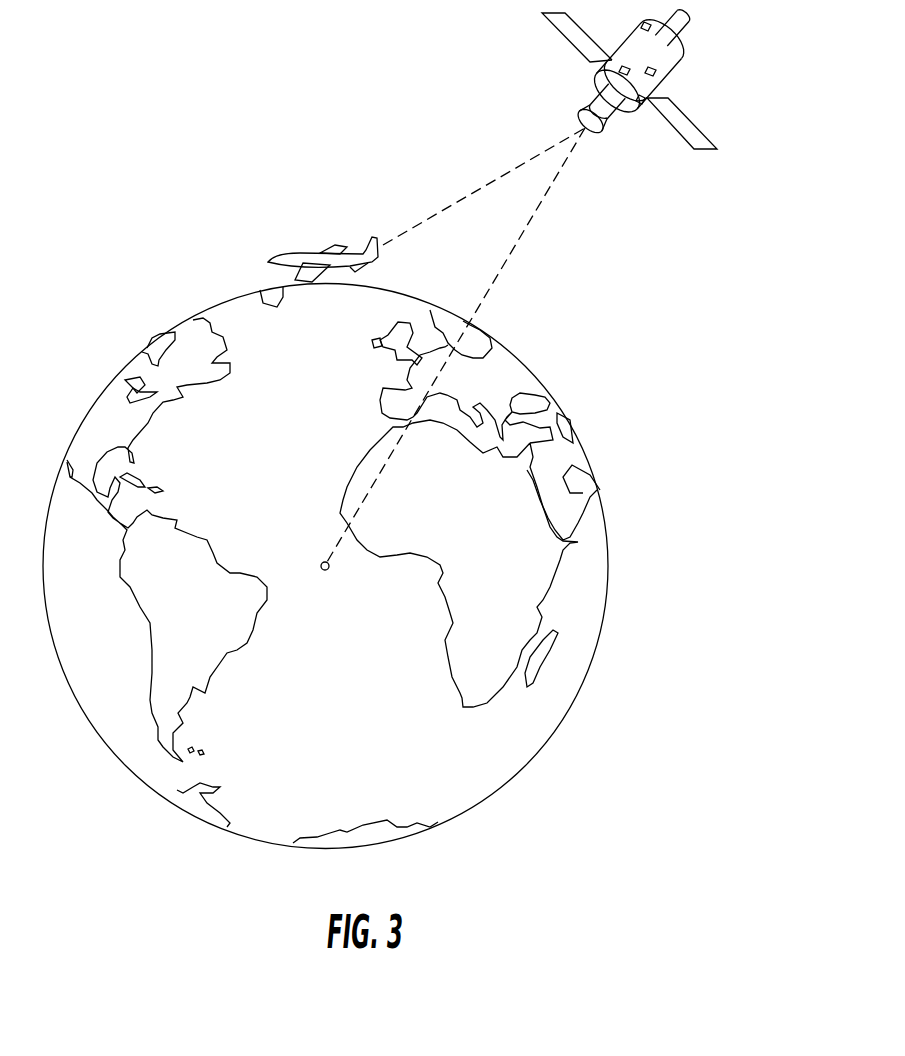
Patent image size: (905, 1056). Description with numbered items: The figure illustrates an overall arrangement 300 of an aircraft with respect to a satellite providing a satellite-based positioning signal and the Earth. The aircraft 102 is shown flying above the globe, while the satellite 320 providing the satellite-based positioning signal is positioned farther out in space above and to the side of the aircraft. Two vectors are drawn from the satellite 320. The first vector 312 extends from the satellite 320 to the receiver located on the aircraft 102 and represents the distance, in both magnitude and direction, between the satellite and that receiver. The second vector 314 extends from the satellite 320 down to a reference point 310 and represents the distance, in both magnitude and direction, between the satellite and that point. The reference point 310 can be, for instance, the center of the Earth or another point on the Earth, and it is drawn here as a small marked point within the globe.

The system 300 is at (123, 180).
The aircraft 102 is at (293, 262).
The reference point 310 is at (328, 571).
The first vector 312 is at (487, 185).
The second vector 314 is at (497, 275).
The satellite 320 is at (693, 53).